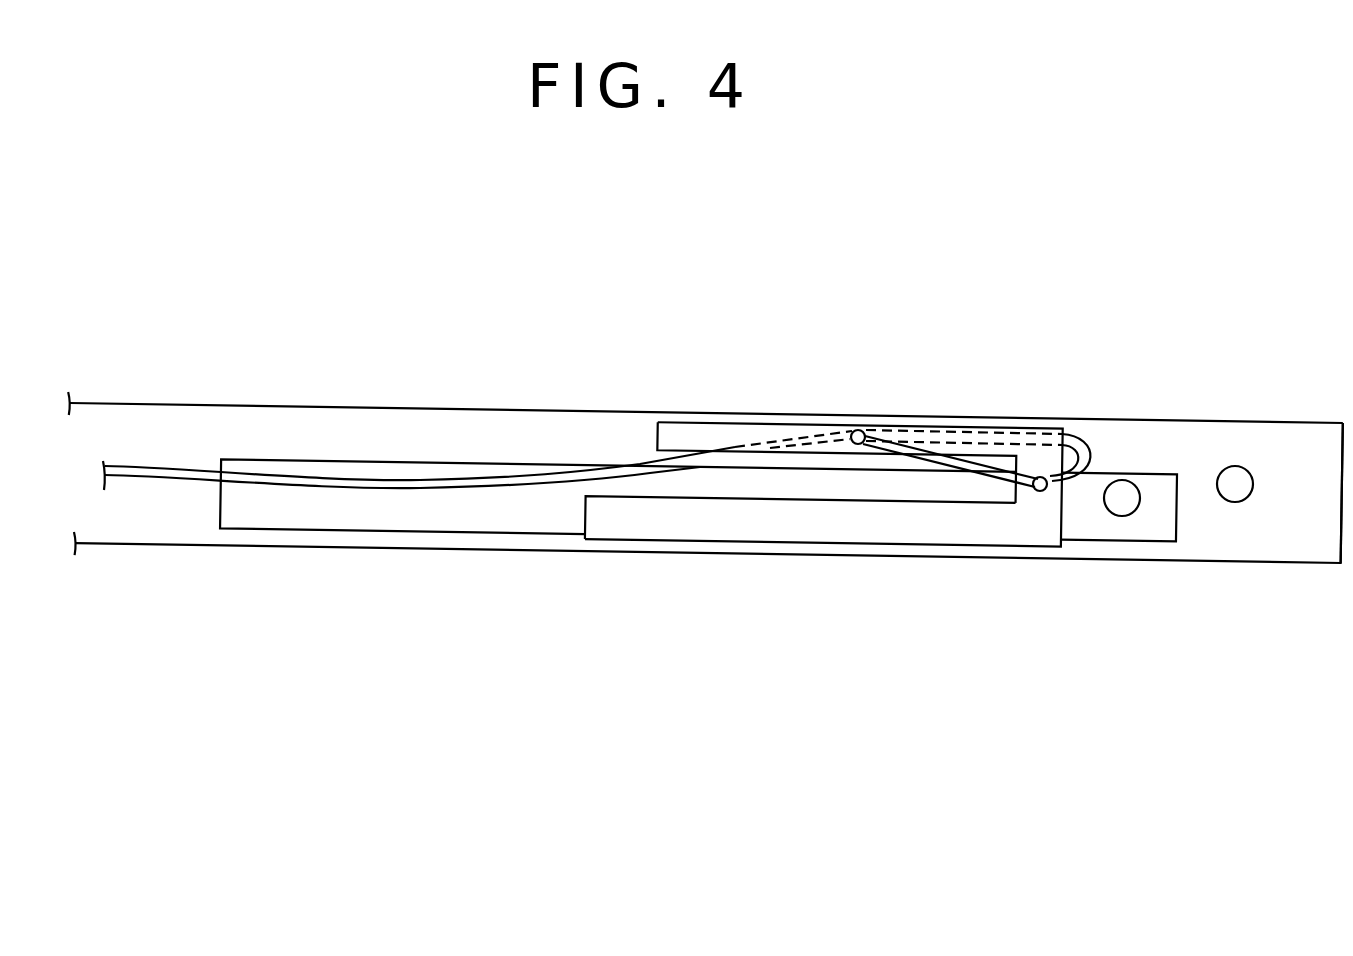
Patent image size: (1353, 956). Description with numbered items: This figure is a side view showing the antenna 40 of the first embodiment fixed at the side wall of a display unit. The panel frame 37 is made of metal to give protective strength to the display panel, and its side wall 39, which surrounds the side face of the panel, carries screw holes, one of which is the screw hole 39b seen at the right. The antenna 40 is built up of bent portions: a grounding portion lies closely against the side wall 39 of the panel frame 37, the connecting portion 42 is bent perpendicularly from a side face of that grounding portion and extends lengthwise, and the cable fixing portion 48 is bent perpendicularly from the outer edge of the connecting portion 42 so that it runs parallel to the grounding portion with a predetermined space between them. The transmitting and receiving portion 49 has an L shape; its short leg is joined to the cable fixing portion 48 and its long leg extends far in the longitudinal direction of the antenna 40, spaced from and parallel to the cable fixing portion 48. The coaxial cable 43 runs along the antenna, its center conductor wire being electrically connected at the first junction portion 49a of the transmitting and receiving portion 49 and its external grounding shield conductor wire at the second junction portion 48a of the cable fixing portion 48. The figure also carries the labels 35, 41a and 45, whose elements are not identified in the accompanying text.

The upper body 35 is at (388, 405).
The panel frame 37 is at (1122, 420).
The side wall 39 is at (1316, 447).
The screw hole 39b is at (1237, 466).
The antenna 40 is at (922, 570).
The hole 41a is at (1122, 517).
The connecting portion 42 is at (403, 530).
The coaxial cable 43 is at (522, 476).
The slot 45 is at (484, 512).
The cable fixing portion 48 is at (687, 516).
The second junction portion 48a is at (1041, 493).
The transmitting and receiving portion 49 is at (707, 428).
The first junction portion 49a is at (850, 446).